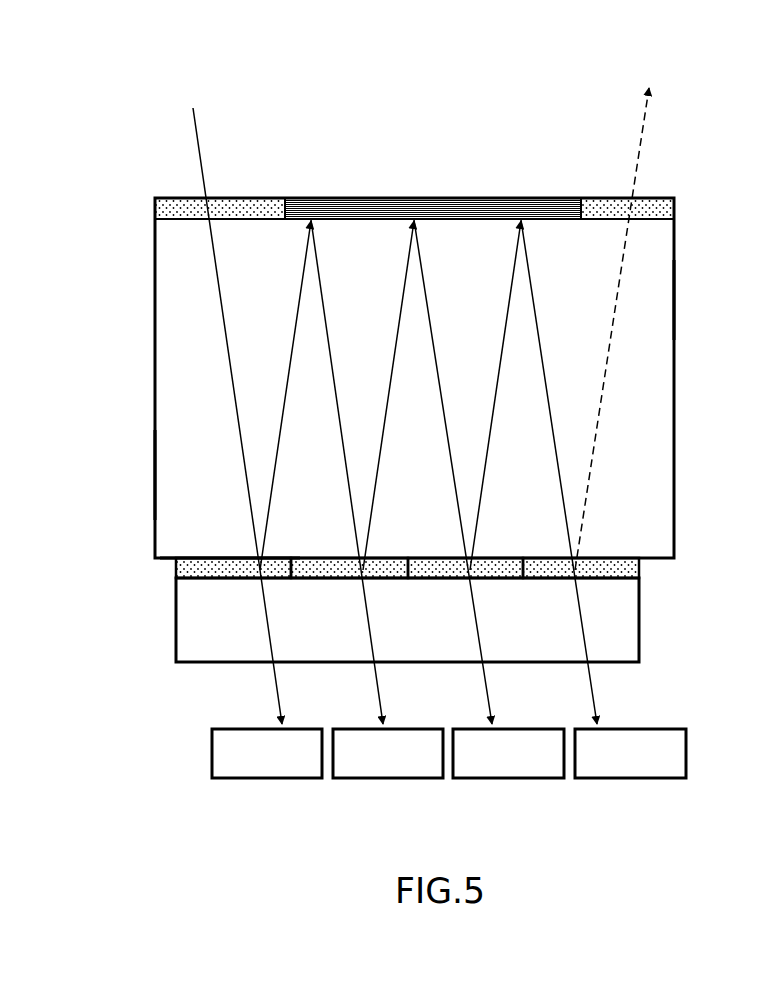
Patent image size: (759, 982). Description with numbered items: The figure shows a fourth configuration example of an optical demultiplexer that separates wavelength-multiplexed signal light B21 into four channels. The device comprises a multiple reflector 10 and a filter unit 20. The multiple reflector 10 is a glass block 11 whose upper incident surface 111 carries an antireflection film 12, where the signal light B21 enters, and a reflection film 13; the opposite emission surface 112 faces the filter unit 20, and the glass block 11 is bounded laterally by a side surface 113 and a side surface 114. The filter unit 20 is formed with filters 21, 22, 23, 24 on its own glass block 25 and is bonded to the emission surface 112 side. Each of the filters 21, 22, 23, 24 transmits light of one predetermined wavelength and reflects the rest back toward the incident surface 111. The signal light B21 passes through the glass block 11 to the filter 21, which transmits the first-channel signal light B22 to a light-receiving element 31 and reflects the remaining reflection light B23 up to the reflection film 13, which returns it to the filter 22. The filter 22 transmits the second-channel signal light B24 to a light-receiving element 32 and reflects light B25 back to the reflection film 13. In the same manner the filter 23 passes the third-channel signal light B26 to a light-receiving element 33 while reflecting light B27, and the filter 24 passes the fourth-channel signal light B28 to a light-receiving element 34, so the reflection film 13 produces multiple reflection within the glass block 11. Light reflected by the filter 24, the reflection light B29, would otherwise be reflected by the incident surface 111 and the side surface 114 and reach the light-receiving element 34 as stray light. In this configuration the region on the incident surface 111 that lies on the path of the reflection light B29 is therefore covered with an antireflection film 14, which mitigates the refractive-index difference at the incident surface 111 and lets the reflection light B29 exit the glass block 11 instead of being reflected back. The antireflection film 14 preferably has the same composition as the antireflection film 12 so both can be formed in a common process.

The multiple reflector 10 is at (108, 198).
The glass block 11 is at (153, 309).
The antireflection film 12 is at (242, 198).
The reflection film 13 is at (534, 198).
The antireflection film 14 is at (654, 198).
The incident surface 111 is at (378, 222).
The emission surface 112 is at (169, 557).
The side surface of light guide plate 113 is at (156, 486).
The side surface 114 is at (675, 298).
The filter unit 20 is at (108, 562).
The filter 21 is at (220, 578).
The filter 22 is at (318, 578).
The filter 23 is at (430, 578).
The filter 24 is at (538, 578).
The glass block 25 is at (175, 612).
The light-receiving element 31 is at (250, 779).
The light-receiving element 32 is at (375, 779).
The light-receiving element 33 is at (497, 779).
The light-receiving element 34 is at (612, 779).
The signal light B21 is at (209, 339).
The signal light B22 is at (294, 647).
The reflection light B23 is at (283, 395).
The signal light B24 is at (370, 472).
The reflected light beam B25 is at (385, 395).
The signal light B26 is at (476, 472).
The reflected light beam B27 is at (491, 395).
The signal light B28 is at (581, 472).
The reflection light B29 is at (609, 329).